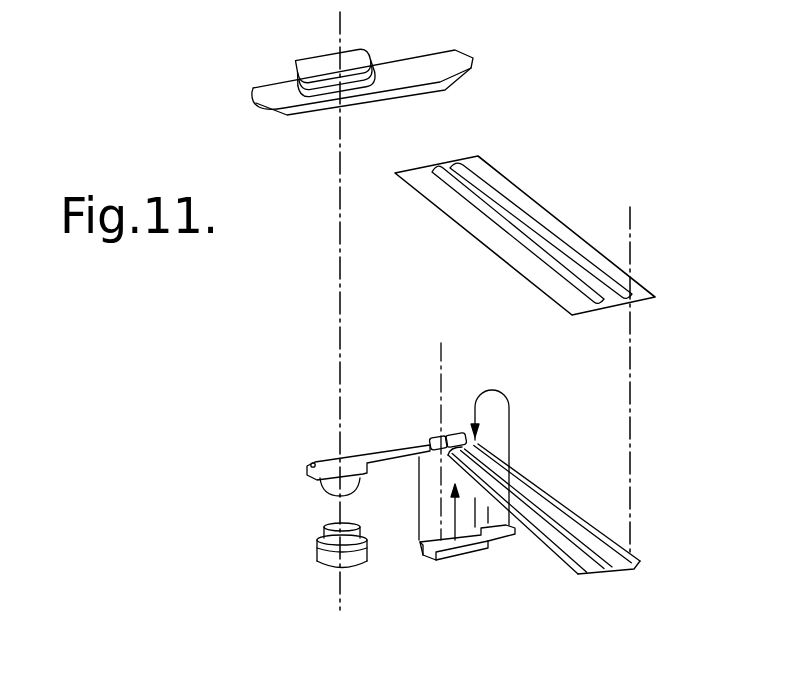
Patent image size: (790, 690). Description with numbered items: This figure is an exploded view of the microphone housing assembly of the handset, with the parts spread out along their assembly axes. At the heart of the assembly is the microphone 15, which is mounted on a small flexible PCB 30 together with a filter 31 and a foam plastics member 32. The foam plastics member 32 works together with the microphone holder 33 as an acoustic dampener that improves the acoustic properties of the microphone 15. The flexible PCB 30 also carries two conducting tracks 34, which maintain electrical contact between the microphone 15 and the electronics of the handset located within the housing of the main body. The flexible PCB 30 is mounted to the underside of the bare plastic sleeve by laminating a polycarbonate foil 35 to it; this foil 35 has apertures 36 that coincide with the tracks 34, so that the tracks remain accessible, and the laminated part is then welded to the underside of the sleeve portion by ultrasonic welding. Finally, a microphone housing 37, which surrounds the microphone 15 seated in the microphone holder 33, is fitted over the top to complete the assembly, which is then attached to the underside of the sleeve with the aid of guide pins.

The microphone 15 is at (323, 486).
The flexible PCB 30 is at (573, 512).
The filter 31 is at (454, 433).
The foam plastics member 32 is at (448, 553).
The microphone holder 33 is at (358, 567).
The conducting tracks 34 is at (610, 567).
The polycarbonate foil 35 is at (581, 190).
The apertures 36 is at (340, 310).
The microphone housing 37 is at (357, 50).